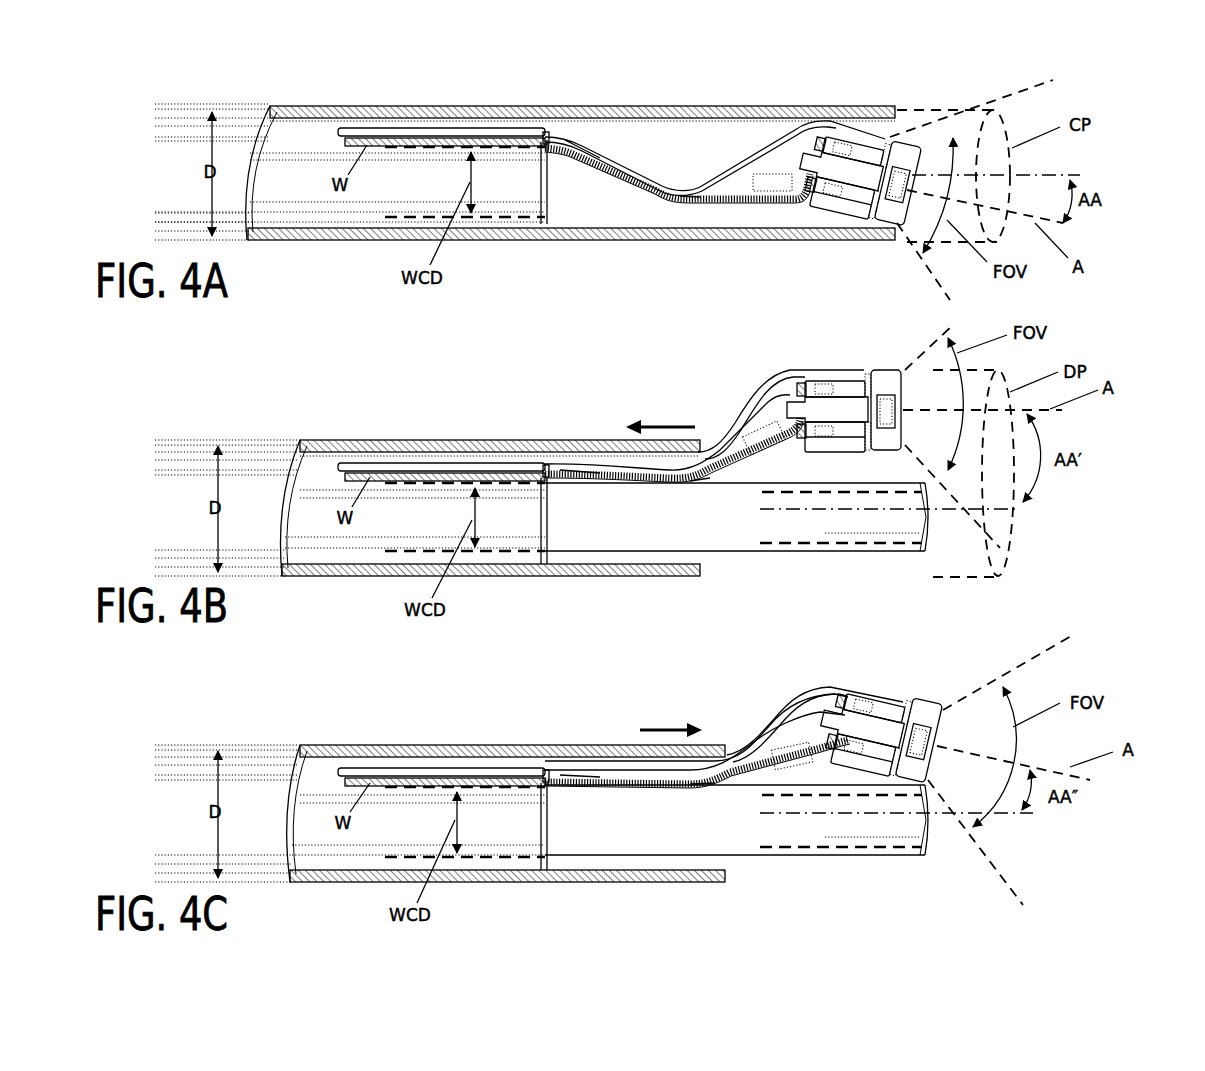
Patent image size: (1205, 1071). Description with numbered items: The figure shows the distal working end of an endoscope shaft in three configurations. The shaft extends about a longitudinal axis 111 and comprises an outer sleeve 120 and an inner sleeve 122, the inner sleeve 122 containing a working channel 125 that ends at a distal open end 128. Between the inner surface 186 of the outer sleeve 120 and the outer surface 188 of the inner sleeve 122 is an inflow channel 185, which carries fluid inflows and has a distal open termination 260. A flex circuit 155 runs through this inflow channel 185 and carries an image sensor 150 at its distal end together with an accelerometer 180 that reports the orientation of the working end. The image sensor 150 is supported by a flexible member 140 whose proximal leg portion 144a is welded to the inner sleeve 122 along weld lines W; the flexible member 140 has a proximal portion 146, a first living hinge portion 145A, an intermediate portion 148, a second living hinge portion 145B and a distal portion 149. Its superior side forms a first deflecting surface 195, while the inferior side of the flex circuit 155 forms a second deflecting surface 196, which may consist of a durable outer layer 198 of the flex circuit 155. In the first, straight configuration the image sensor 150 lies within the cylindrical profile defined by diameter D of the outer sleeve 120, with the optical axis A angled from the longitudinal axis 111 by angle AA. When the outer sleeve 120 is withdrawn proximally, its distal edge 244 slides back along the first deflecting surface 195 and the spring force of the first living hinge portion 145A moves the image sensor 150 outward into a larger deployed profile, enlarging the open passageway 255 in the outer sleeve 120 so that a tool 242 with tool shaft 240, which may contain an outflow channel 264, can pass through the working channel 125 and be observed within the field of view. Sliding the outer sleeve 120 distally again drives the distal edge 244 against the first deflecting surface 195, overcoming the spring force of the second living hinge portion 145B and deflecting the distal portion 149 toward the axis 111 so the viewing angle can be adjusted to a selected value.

In FIG. 4A, the longitudinal axis 111 is at (1070, 172).
In FIG. 4B, the longitudinal axis 111 is at (800, 513).
In FIG. 4C, the longitudinal axis 111 is at (884, 818).
In FIG. 4A, the outer sleeve 120 is at (365, 236).
In FIG. 4B, the outer sleeve 120 is at (350, 570).
In FIG. 4C, the outer sleeve 120 is at (340, 878).
In FIG. 4A, the inner sleeve 122 is at (535, 190).
In FIG. 4B, the inner sleeve 122 is at (510, 525).
In FIG. 4C, the inner sleeve 122 is at (510, 830).
In FIG. 4A, the working channel 125 is at (490, 222).
In FIG. 4B, the working channel 125 is at (518, 555).
In FIG. 4C, the working channel 125 is at (520, 860).
In FIG. 4A, the distal open end 128 is at (547, 185).
In FIG. 4B, the distal open end 128 is at (548, 520).
In FIG. 4C, the distal open end 128 is at (548, 830).
In FIG. 4A, the flexible member 140 is at (562, 138).
In FIG. 4C, the flexible member 140 is at (568, 769).
In FIG. 4A, the proximal leg portion 144a is at (358, 133).
In FIG. 4B, the proximal leg portion 144a is at (358, 467).
In FIG. 4C, the proximal leg portion 144a is at (358, 772).
In FIG. 4A, the first living hinge portion 145A is at (580, 143).
In FIG. 4B, the first living hinge portion 145A is at (580, 479).
In FIG. 4C, the first living hinge portion 145A is at (590, 775).
In FIG. 4A, the second living hinge portion 145B is at (688, 183).
In FIG. 4B, the second living hinge portion 145B is at (692, 482).
In FIG. 4C, the second living hinge portion 145B is at (700, 775).
In FIG. 4A, the proximal portion 146 is at (545, 135).
In FIG. 4B, the proximal portion 146 is at (547, 468).
In FIG. 4C, the proximal portion 146 is at (547, 773).
In FIG. 4A, the intermediate portion 148 is at (594, 143).
In FIG. 4B, the intermediate portion 148 is at (627, 468).
In FIG. 4C, the intermediate portion 148 is at (601, 767).
In FIG. 4A, the distal portion 149 is at (762, 148).
In FIG. 4B, the distal portion 149 is at (755, 385).
In FIG. 4C, the distal portion 149 is at (818, 690).
In FIG. 4A, the image sensor 150 is at (916, 134).
In FIG. 4B, the image sensor 150 is at (876, 366).
In FIG. 4C, the image sensor 150 is at (918, 686).
In FIG. 4C, the flex circuit 155 is at (806, 762).
In FIG. 4A, the accelerometer 180 is at (770, 184).
In FIG. 4B, the accelerometer 180 is at (765, 443).
In FIG. 4C, the accelerometer 180 is at (786, 762).
In FIG. 4A, the inflow channel 185 is at (423, 120).
In FIG. 4B, the inflow channel 185 is at (423, 455).
In FIG. 4C, the inflow channel 185 is at (423, 760).
In FIG. 4A, the inner surface 186 is at (462, 118).
In FIG. 4A, the outer surface 188 is at (450, 132).
In FIG. 4A, the first deflecting surface 195 is at (735, 163).
In FIG. 4B, the first deflecting surface 195 is at (740, 400).
In FIG. 4C, the first deflecting surface 195 is at (778, 706).
In FIG. 4A, the second deflecting surface 196 is at (640, 188).
In FIG. 4B, the second deflecting surface 196 is at (620, 480).
In FIG. 4C, the second deflecting surface 196 is at (638, 790).
In FIG. 4A, the outer layer 198 is at (701, 205).
In FIG. 4B, the outer layer 198 is at (745, 468).
In FIG. 4C, the outer layer 198 is at (760, 785).
In FIG. 4B, the tool shaft 240 is at (840, 550).
In FIG. 4C, the tool shaft 240 is at (912, 850).
In FIG. 4B, the tool 242 is at (882, 552).
In FIG. 4C, the tool 242 is at (853, 855).
In FIG. 4A, the distal edge 244 is at (890, 128).
In FIG. 4B, the distal edge 244 is at (694, 467).
In FIG. 4C, the distal edge 244 is at (729, 752).
In FIG. 4A, the open passageway 255 is at (785, 222).
In FIG. 4B, the open passageway 255 is at (652, 563).
In FIG. 4C, the open passageway 255 is at (681, 866).
In FIG. 4A, the distal open termination 260 is at (890, 125).
In FIG. 4B, the distal open termination 260 is at (694, 560).
In FIG. 4C, the distal open termination 260 is at (918, 740).
In FIG. 4B, the outflow channel 264 is at (910, 550).
In FIG. 4C, the outflow channel 264 is at (915, 852).